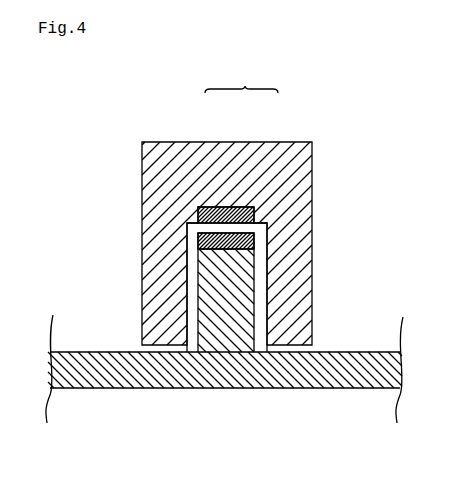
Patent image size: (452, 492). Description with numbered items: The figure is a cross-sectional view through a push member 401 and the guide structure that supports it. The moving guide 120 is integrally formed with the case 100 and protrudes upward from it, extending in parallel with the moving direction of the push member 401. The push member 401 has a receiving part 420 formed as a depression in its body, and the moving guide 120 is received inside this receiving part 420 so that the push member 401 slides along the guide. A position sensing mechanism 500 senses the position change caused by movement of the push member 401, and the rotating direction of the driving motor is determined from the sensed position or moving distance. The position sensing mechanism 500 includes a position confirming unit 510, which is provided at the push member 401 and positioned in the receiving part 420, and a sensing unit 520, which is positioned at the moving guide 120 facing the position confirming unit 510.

The case 100 is at (150, 377).
The moving guide 120 is at (245, 293).
The push member 401 is at (148, 200).
The receiving part 420 is at (265, 227).
The position sensing mechanism 500 is at (241, 79).
The position confirming unit 510 is at (245, 232).
The sensing unit 520 is at (216, 208).